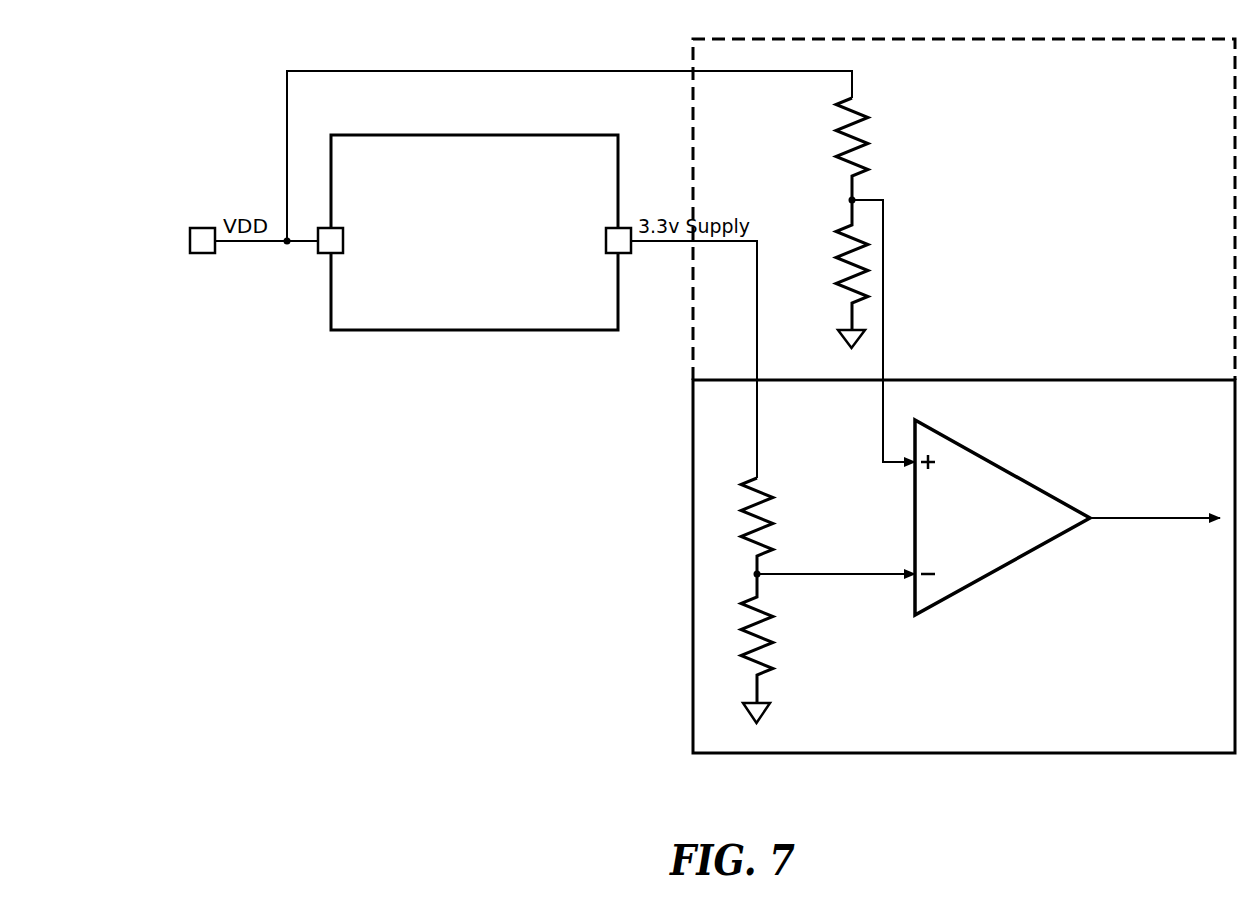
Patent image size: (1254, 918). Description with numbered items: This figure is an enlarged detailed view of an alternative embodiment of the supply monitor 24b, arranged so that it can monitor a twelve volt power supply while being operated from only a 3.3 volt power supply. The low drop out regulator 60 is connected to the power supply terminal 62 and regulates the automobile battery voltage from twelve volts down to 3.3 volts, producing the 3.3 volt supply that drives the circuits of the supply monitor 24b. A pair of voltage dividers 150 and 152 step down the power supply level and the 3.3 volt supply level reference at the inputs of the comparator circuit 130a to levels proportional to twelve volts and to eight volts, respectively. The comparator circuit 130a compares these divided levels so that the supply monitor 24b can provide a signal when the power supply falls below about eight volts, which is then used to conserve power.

The low drop out regulator 60 is at (486, 206).
The power supply terminal 62 is at (208, 253).
The voltage divider 150 is at (877, 135).
The voltage divider 152 is at (780, 535).
The comparator circuit 130a is at (1004, 559).
The supply monitor 24b is at (1109, 746).